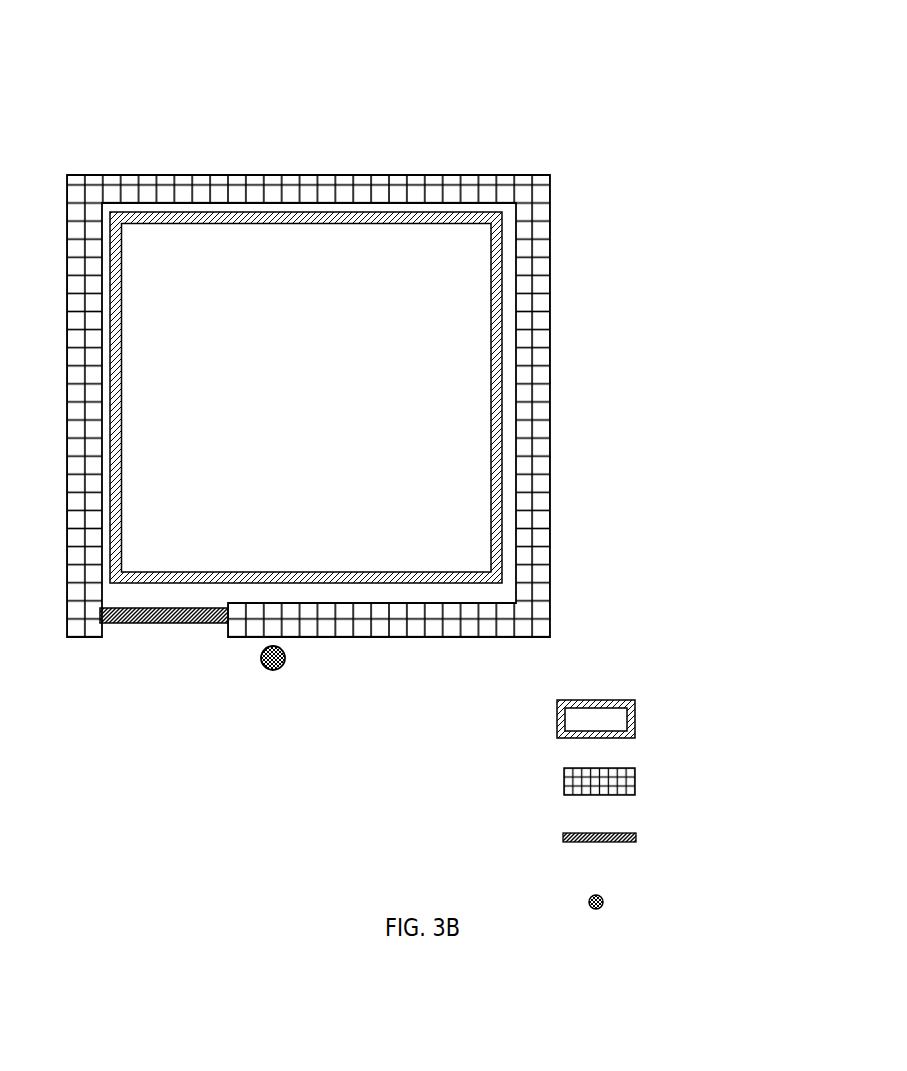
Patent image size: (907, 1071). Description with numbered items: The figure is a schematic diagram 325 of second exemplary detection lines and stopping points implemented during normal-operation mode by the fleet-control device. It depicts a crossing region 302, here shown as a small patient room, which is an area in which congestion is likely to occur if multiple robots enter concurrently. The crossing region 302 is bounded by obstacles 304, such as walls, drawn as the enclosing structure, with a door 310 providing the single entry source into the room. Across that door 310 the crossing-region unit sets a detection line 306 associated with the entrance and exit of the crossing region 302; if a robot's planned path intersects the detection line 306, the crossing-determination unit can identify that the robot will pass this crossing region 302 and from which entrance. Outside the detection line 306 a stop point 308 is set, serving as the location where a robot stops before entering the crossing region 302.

The schematic diagram 325 is at (440, 38).
The crossing region 302 is at (875, 729).
The obstacle 304 is at (840, 784).
The detection line 306 is at (863, 849).
The stop point 308 is at (820, 914).
The door 310 is at (172, 711).